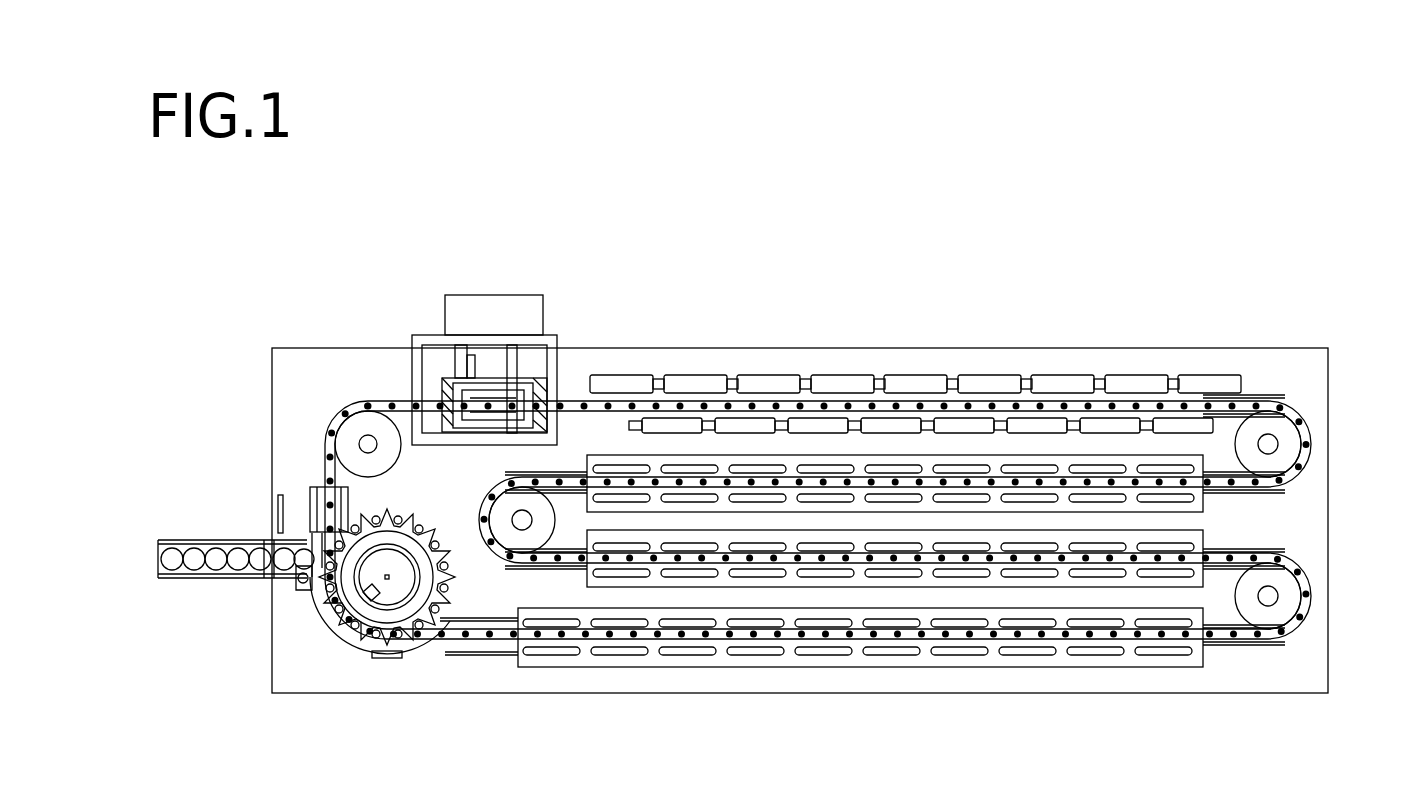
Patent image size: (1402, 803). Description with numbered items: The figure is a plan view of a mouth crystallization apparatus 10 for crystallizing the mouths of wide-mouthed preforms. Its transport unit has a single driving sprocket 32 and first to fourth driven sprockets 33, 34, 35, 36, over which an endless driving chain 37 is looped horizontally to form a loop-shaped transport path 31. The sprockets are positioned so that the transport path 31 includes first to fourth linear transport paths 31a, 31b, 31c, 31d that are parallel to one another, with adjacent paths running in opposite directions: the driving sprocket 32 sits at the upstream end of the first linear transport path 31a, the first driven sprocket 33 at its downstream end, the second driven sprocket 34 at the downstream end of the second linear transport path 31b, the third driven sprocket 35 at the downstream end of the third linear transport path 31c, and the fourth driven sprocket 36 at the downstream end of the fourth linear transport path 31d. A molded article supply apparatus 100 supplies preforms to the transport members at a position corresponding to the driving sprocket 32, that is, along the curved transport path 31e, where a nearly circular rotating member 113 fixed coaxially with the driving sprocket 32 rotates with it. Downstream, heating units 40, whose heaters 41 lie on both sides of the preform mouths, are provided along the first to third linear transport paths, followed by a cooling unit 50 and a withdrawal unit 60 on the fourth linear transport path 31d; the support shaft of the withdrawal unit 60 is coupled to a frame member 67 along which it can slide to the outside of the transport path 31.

The mouth crystallization apparatus 10 is at (1118, 252).
The molded article supply apparatus 100 is at (296, 674).
The transport path 31 is at (498, 640).
The first linear transport path 31a is at (1298, 653).
The second linear transport path 31b is at (1292, 553).
The third linear transport path 31c is at (1290, 493).
The fourth linear transport path 31d is at (1287, 390).
The curved transport path 31e is at (346, 656).
The driving sprocket 32 is at (392, 588).
The rotating member 113 is at (387, 577).
The first driven sprocket 33 is at (1273, 615).
The second driven sprocket 34 is at (530, 540).
The third driven sprocket 35 is at (1253, 435).
The fourth driven sprocket 36 is at (368, 432).
The driving chain 37 is at (688, 648).
The heating unit 40 is at (815, 470).
The heater 41 is at (962, 652).
The cooling unit 50 is at (905, 378).
The withdrawal unit 60 is at (578, 314).
The frame member 67 is at (462, 358).